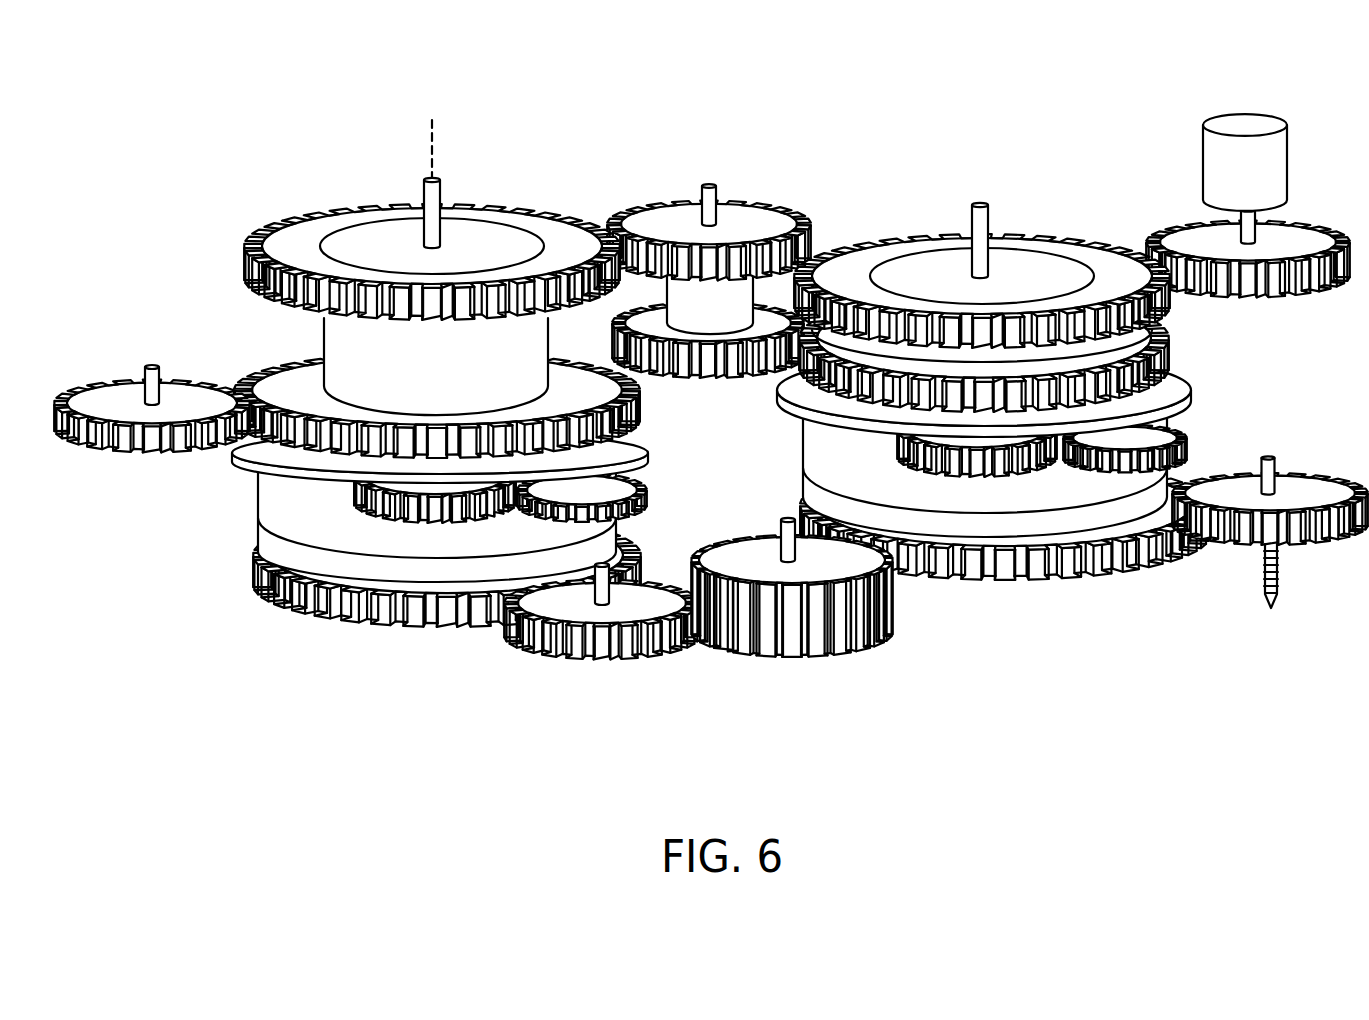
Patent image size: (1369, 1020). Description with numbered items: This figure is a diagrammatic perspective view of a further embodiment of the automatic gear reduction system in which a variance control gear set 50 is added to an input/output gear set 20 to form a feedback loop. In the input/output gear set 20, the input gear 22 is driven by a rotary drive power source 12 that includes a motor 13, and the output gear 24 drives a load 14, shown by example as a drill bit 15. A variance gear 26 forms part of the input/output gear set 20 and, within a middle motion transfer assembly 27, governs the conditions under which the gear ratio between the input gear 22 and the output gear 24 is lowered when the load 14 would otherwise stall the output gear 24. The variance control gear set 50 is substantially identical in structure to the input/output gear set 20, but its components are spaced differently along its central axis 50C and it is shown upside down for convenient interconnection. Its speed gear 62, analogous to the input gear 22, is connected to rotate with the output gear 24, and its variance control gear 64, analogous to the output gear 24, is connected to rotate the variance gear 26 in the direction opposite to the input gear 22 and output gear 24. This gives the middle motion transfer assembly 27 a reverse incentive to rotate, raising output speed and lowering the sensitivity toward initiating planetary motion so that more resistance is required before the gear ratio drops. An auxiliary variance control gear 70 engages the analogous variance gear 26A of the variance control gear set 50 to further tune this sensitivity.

The rotary drive power source 12 is at (1327, 230).
The motor 13 is at (1288, 152).
The load 14 is at (1322, 480).
The drill bit 15 is at (1284, 572).
The input/output gear set 20 is at (782, 120).
The input gear 22 is at (1100, 242).
The output gear 24 is at (1060, 574).
The variance gear 26 is at (800, 382).
The variance gear of the variance control gear set 26A is at (264, 372).
The middle motion transfer assembly 27 is at (1203, 335).
The variance control gear set 50 is at (235, 133).
The central axis 50C is at (433, 140).
The speed gear 62 is at (295, 618).
The variance control gear 64 is at (262, 238).
The auxiliary variance control gear 70 is at (108, 462).